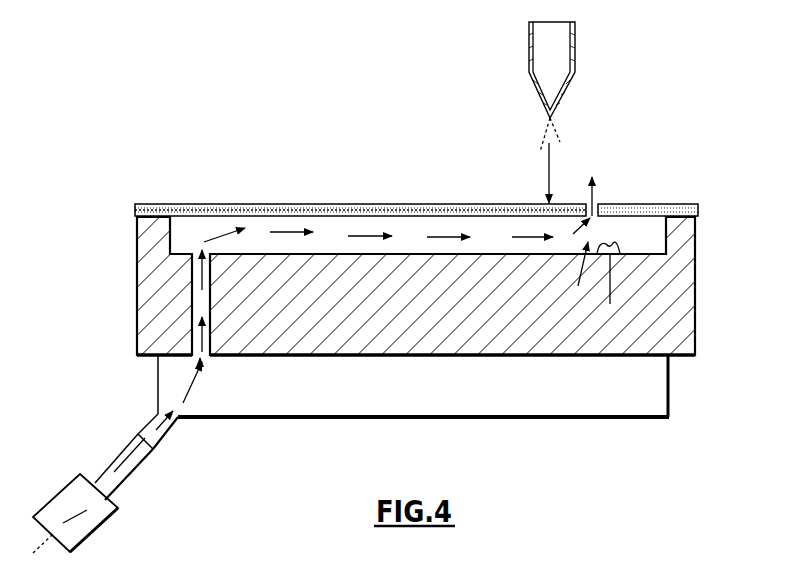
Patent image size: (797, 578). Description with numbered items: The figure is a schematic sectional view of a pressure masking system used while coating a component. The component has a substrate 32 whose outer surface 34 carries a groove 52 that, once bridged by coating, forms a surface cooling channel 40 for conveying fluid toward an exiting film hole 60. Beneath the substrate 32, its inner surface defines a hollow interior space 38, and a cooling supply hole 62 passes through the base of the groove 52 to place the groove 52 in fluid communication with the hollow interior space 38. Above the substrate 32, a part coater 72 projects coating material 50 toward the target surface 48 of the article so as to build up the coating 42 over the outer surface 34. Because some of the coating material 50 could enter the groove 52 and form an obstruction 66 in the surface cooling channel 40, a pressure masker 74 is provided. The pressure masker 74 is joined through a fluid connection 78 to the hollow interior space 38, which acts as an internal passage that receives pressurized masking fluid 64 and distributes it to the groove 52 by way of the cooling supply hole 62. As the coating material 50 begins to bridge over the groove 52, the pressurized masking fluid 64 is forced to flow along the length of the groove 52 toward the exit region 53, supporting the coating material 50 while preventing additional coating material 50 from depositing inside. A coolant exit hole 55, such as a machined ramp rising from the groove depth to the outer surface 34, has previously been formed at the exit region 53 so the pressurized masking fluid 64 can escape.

The substrate 32 is at (667, 329).
The outer surface 34 is at (150, 217).
The hollow interior space 38 is at (655, 403).
The surface cooling channel 40 is at (667, 237).
The coating 42 is at (218, 203).
The target surface 48 is at (283, 213).
The coating material 50 is at (540, 150).
The groove 52 is at (395, 222).
The exit region 53 is at (578, 286).
The coolant exit hole 55 is at (596, 218).
The exiting film hole 60 is at (595, 207).
The cooling supply hole 62 is at (217, 313).
The pressurized masking fluid 64 is at (192, 378).
The obstruction 66 is at (610, 304).
The part coater 72 is at (573, 57).
The pressure masker 74 is at (105, 523).
The fluid connection 78 is at (167, 435).